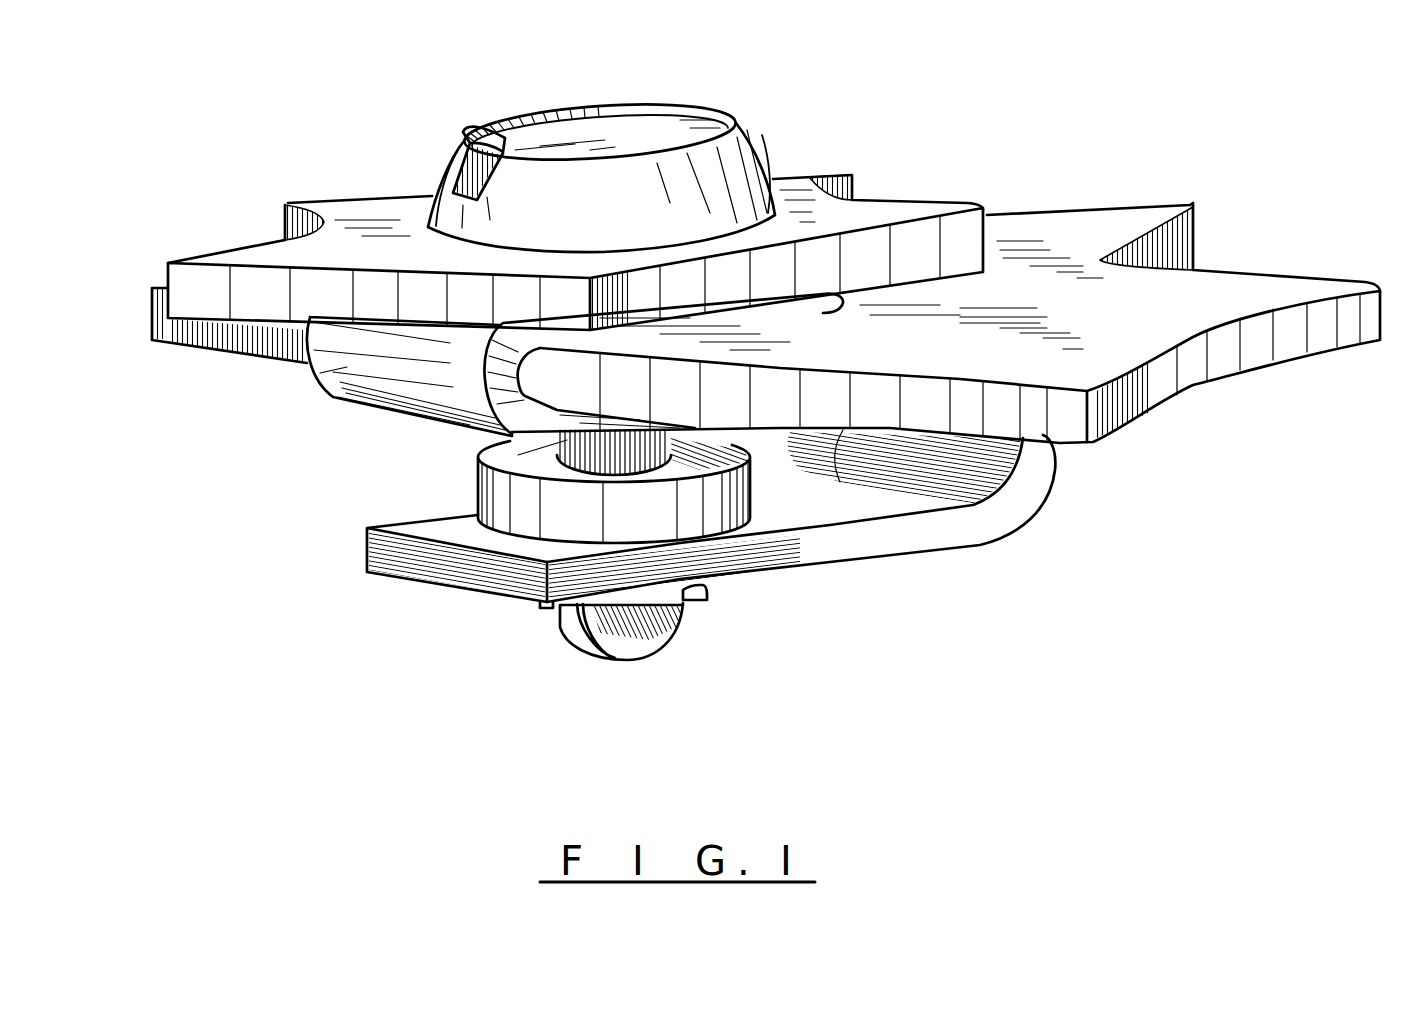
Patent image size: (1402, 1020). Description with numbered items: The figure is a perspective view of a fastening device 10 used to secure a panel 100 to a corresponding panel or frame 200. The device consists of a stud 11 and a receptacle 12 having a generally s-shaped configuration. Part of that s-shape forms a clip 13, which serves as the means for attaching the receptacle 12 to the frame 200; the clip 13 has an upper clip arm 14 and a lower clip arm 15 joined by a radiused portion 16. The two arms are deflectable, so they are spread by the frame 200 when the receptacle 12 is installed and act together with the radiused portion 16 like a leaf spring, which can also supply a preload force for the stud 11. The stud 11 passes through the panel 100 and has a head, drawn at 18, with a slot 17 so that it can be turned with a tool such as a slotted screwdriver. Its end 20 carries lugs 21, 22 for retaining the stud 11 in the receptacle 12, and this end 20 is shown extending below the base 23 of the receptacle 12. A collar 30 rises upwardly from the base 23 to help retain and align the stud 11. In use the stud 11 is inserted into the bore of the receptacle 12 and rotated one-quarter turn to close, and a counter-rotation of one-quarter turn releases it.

The fastening device 10 is at (845, 73).
The stud 11 is at (192, 193).
The receptacle 12 is at (361, 662).
The clip 13 is at (780, 319).
The upper clip arm 14 is at (826, 302).
The lower clip arm 15 is at (495, 438).
The radiused portion 16 is at (345, 370).
The slot 17 is at (480, 128).
The knob 18 is at (601, 151).
The end 20 is at (621, 659).
The lug 21 is at (573, 635).
The lug 22 is at (711, 542).
The base 23 is at (857, 540).
The collar 30 is at (707, 510).
The panel 100 is at (897, 215).
The frame 200 is at (875, 338).